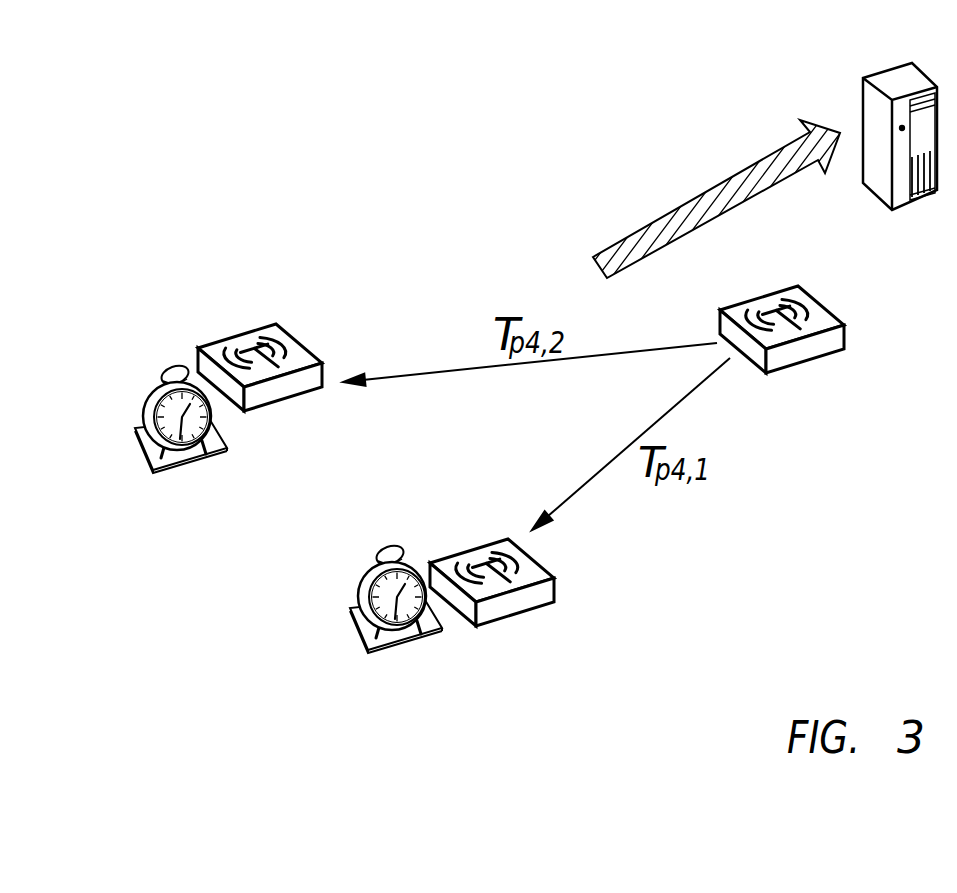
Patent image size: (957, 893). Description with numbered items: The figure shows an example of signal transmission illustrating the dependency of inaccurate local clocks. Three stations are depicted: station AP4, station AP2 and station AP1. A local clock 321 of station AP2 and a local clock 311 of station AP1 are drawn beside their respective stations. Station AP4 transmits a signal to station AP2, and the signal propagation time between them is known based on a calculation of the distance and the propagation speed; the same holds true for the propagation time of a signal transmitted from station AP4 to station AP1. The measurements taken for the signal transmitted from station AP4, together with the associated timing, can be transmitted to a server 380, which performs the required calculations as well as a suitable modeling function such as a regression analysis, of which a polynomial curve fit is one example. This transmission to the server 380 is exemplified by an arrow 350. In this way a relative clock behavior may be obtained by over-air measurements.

The server 380 is at (885, 65).
The arrow 350 is at (737, 173).
The local clock of station AP2 321 is at (143, 408).
The local clock of station AP1 311 is at (357, 590).
The station AP1 is at (533, 608).
The station AP2 is at (232, 335).
The station AP4 is at (832, 352).